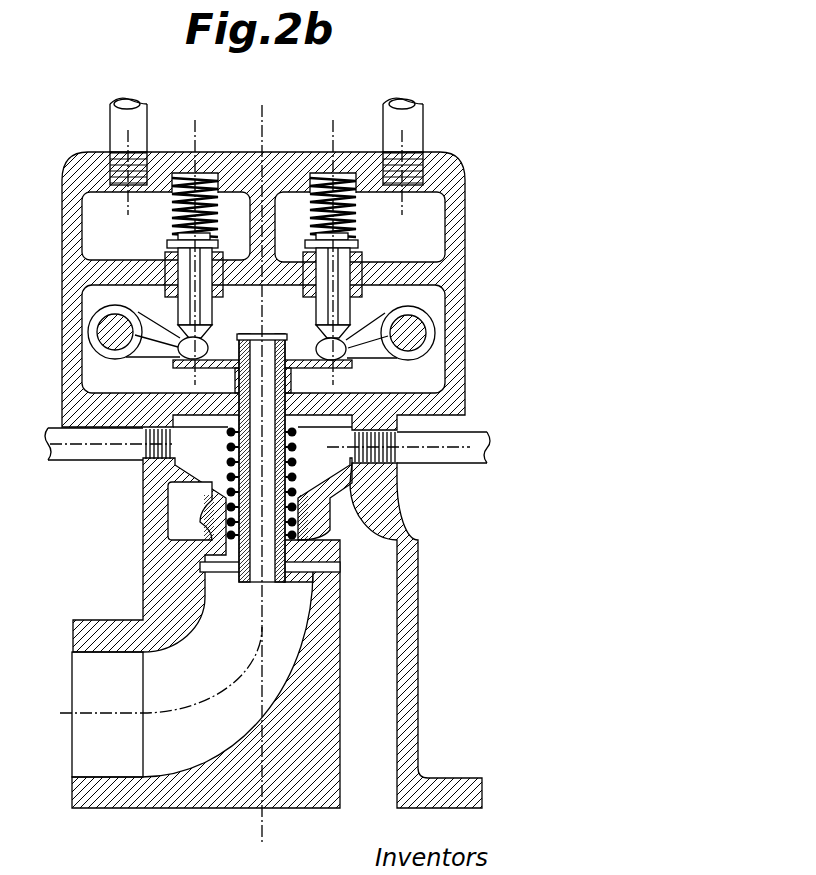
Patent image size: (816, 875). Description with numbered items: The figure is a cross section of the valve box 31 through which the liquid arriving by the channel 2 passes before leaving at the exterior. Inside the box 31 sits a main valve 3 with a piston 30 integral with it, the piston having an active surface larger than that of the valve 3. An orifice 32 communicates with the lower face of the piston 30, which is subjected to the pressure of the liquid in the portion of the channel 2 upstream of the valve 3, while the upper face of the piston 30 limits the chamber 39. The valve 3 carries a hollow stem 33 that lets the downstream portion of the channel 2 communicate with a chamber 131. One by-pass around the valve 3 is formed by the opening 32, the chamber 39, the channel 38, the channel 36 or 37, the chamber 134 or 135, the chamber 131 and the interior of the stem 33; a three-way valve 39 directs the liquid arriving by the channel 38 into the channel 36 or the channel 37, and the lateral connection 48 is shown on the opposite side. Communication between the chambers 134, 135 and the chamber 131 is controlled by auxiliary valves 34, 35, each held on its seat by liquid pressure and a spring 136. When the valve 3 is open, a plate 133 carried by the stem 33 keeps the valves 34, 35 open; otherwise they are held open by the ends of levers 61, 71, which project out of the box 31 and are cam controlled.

The channel 2 is at (160, 687).
The main valve 3 is at (285, 572).
The piston 30 is at (207, 487).
The valve box 31 is at (415, 604).
The orifice 32 is at (318, 498).
The hollow stem 33 is at (281, 403).
The auxiliary valve 34 is at (357, 247).
The auxiliary valve 35 is at (172, 246).
The channel 36 is at (404, 118).
The channel 37 is at (127, 100).
The channel 38 is at (465, 461).
The chamber 39 is at (190, 456).
The left inlet pipe 48 is at (88, 462).
The lever 61 is at (373, 331).
The lever 71 is at (147, 328).
The chamber 131 is at (437, 377).
The plate 133 is at (190, 364).
The chamber 134 is at (438, 237).
The chamber 135 is at (92, 213).
The spring 136 is at (198, 186).